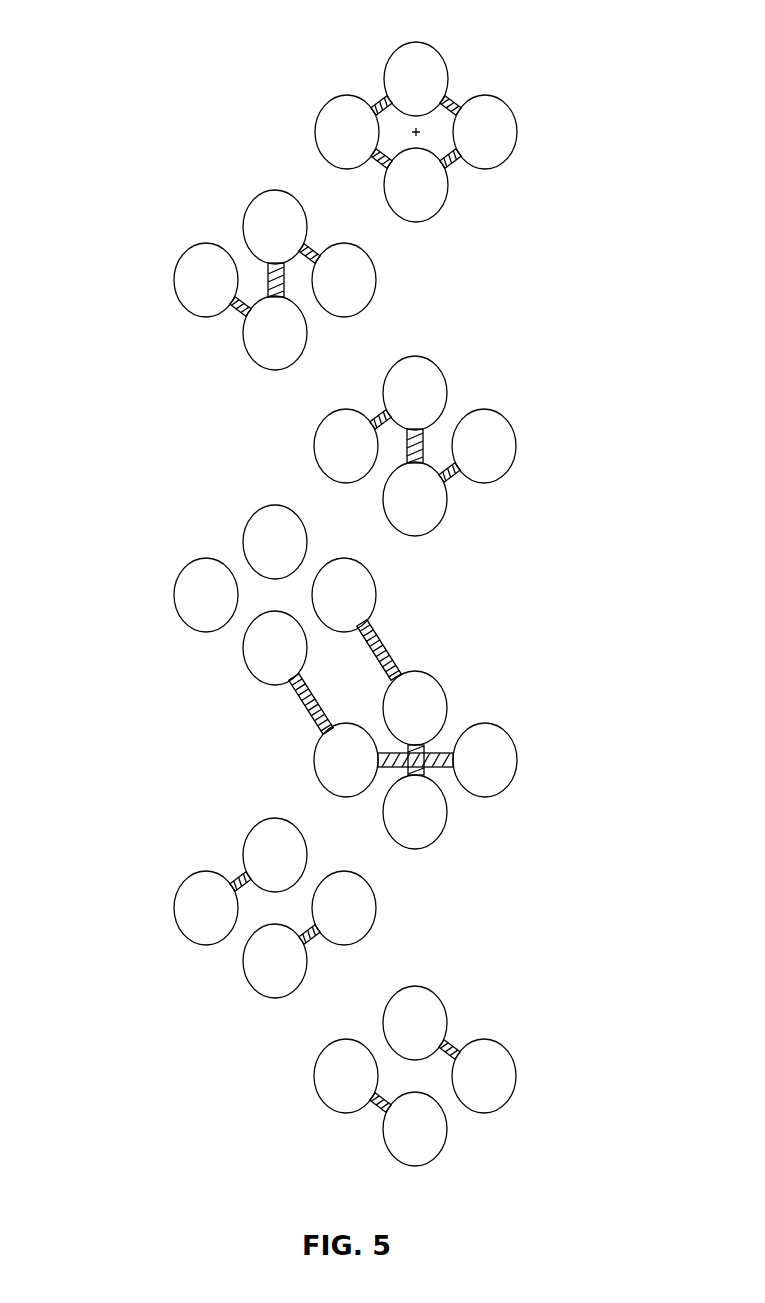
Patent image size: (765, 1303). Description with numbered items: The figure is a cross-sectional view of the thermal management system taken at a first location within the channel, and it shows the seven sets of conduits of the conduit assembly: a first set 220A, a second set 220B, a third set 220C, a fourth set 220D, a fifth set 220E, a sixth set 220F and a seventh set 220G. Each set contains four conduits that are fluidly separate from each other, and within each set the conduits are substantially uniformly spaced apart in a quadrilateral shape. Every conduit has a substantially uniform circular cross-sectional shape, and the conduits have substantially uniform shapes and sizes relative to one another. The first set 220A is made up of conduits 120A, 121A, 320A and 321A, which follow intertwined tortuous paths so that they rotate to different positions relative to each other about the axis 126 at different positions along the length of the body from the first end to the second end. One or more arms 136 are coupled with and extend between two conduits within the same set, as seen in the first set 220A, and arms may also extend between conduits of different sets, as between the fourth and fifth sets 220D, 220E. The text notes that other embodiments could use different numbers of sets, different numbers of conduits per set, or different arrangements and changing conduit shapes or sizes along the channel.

The conduit 120A is at (425, 43).
The conduit 121A is at (512, 110).
The conduit 320A is at (446, 197).
The conduit 321A is at (315, 132).
The arm 136 is at (456, 98).
The axis 126 is at (420, 134).
The first set of conduits 220A is at (431, 137).
The second set of conduits 220B is at (153, 278).
The third set of conduits 220C is at (542, 445).
The fourth set of conduits 220D is at (152, 592).
The fifth set of conduits 220E is at (542, 758).
The sixth set of conduits 220F is at (152, 907).
The seventh set of conduits 220G is at (542, 1073).